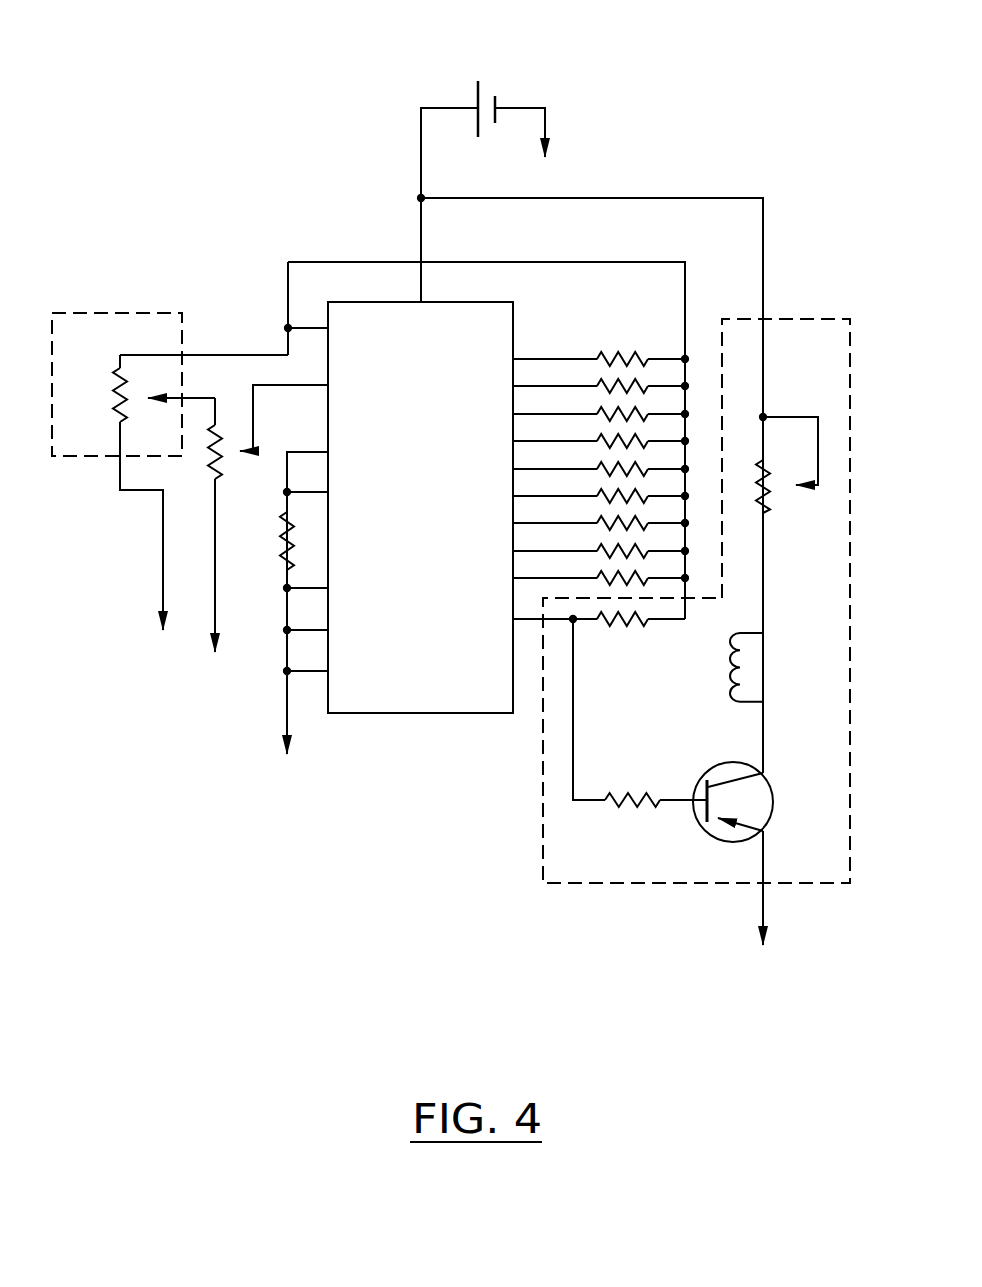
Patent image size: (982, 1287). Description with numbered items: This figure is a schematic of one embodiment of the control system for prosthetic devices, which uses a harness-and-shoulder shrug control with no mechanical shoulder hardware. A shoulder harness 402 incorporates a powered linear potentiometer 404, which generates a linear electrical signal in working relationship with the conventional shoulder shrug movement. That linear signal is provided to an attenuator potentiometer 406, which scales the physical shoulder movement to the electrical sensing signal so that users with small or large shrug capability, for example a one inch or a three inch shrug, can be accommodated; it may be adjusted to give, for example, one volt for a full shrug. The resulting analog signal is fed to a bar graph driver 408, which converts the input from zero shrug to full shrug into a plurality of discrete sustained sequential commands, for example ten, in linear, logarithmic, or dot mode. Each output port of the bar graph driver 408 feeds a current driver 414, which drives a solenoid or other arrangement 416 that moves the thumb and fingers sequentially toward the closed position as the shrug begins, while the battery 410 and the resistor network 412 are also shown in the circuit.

The shoulder harness 402 is at (170, 471).
The powered linear potentiometer 404 is at (118, 402).
The attenuator potentiometer 406 is at (234, 481).
The bar graph driver 408 is at (453, 510).
The battery 410 is at (503, 95).
The resistor network 412 is at (697, 335).
The current driver 414 is at (716, 846).
The solenoid or other arrangement 416 is at (727, 635).